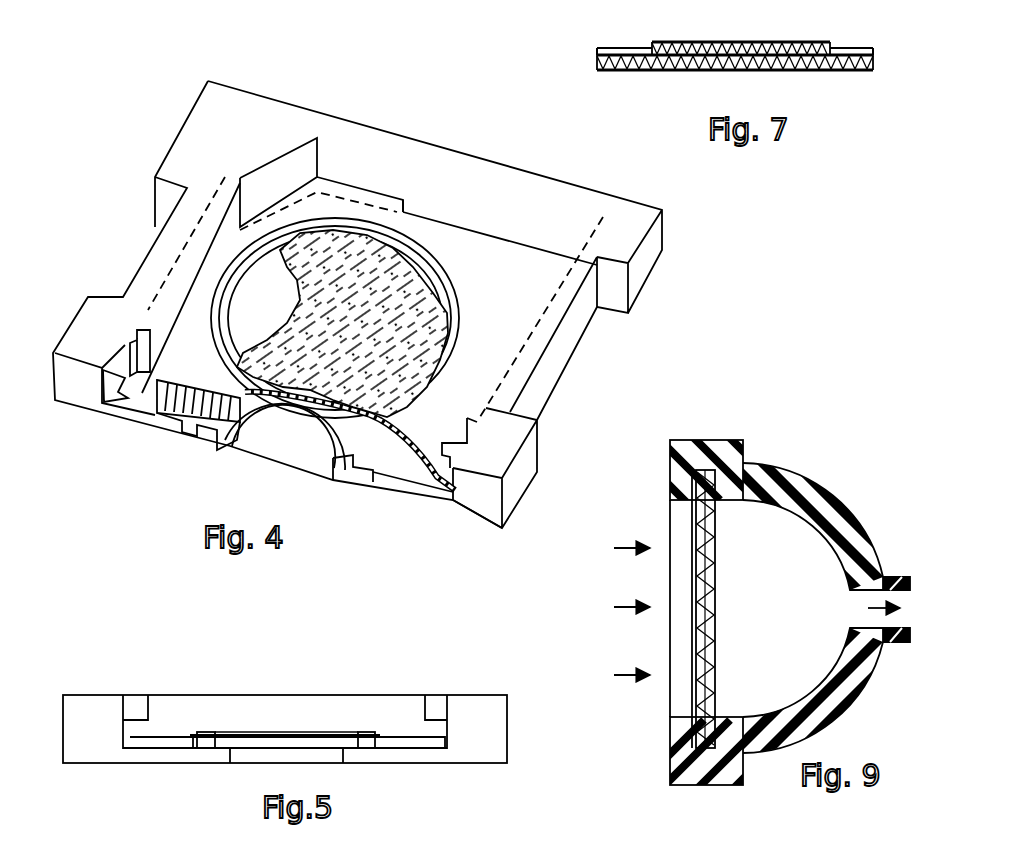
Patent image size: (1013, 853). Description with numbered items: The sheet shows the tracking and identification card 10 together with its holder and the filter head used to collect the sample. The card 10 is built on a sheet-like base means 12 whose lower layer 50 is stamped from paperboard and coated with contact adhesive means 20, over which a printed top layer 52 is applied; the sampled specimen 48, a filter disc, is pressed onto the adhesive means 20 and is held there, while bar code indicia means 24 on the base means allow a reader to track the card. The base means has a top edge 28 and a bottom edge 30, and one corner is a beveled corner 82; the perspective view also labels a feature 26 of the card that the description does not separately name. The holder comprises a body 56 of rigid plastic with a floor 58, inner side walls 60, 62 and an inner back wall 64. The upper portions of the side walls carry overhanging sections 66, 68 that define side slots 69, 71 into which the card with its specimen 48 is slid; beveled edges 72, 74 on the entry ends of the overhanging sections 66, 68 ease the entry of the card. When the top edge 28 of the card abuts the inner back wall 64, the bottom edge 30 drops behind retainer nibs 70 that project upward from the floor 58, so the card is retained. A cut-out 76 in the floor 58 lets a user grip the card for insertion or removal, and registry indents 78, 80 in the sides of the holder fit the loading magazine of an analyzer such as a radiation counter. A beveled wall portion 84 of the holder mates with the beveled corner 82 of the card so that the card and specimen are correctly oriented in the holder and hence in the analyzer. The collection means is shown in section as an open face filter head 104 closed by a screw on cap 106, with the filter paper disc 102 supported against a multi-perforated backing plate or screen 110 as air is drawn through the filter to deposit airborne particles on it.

In FIG. 4, the tracking and identification card 10 is at (226, 260).
In FIG. 5, the tracking and identification card 10 is at (347, 727).
In FIG. 5, the sheet-like base means 12 is at (160, 737).
In FIG. 7, the contact adhesive means 20 is at (873, 62).
In FIG. 4, the bar code indicia means 24 is at (240, 437).
In FIG. 4, the aperture 26 is at (245, 246).
In FIG. 4, the top edge 28 is at (342, 188).
In FIG. 4, the bottom edge 30 is at (170, 410).
In FIG. 5, the bottom edge 30 is at (418, 748).
In FIG. 4, the sampled specimen 48 is at (365, 245).
In FIG. 7, the sampled specimen 48 is at (725, 42).
In FIG. 5, the sampled specimen 48 is at (242, 734).
In FIG. 7, the lower layer 50 is at (660, 70).
In FIG. 7, the top layer 52 is at (617, 48).
In FIG. 4, the body 56 is at (582, 178).
In FIG. 4, the floor 58 is at (143, 397).
In FIG. 5, the floor 58 is at (285, 729).
In FIG. 4, the inner side wall 60 is at (123, 380).
In FIG. 4, the inner side wall 62 is at (443, 510).
In FIG. 4, the inner back wall 64 is at (460, 192).
In FIG. 5, the inner back wall 64 is at (290, 705).
In FIG. 4, the overhanging section 66 is at (183, 307).
In FIG. 4, the overhanging section 68 is at (485, 390).
In FIG. 5, the side slot 69 is at (128, 730).
In FIG. 4, the retainer nibs 70 is at (190, 432).
In FIG. 5, the retainer nibs 70 is at (205, 748).
In FIG. 5, the side slot 71 is at (437, 732).
In FIG. 4, the beveled edge 72 is at (133, 383).
In FIG. 5, the beveled edge 72 is at (133, 708).
In FIG. 4, the beveled edge 74 is at (460, 465).
In FIG. 5, the beveled edge 74 is at (432, 712).
In FIG. 4, the cut-out 76 is at (310, 428).
In FIG. 5, the cut-out 76 is at (268, 757).
In FIG. 4, the registry indent 78 is at (137, 272).
In FIG. 4, the registry indent 80 is at (570, 350).
In FIG. 4, the beveled corner 82 is at (263, 217).
In FIG. 4, the beveled wall portion 84 is at (280, 173).
In FIG. 9, the filter paper disc 102 is at (692, 636).
In FIG. 9, the open face filter head 104 is at (828, 462).
In FIG. 9, the screw on cap 106 is at (722, 440).
In FIG. 9, the backing plate or screen 110 is at (717, 580).